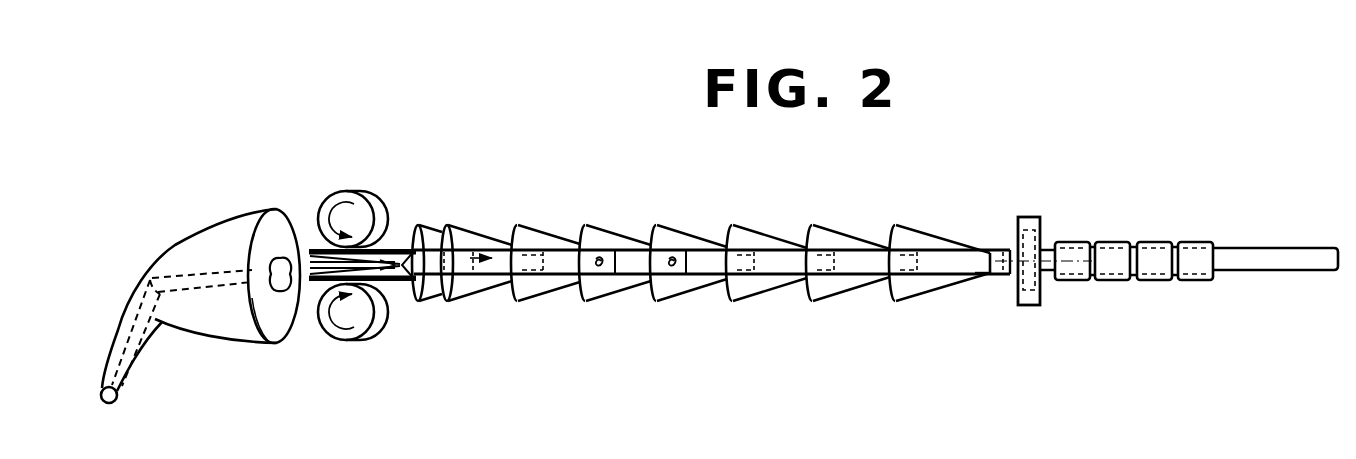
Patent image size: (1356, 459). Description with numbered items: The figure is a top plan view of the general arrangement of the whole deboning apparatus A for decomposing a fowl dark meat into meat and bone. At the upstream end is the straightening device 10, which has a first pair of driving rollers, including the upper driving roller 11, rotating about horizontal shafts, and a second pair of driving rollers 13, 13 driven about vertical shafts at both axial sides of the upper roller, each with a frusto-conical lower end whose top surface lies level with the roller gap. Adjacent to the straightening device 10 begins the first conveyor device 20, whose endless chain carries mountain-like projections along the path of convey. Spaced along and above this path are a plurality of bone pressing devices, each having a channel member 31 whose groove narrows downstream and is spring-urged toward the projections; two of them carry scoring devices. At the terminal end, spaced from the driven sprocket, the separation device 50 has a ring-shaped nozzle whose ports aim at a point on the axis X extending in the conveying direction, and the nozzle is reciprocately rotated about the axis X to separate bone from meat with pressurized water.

The straightening device 10 is at (300, 205).
The second pair of driving rollers 13 is at (356, 192).
The upper driving roller 11 is at (388, 284).
The first conveyor device 20 is at (771, 220).
The channel member 31 is at (800, 234).
The deboning apparatus A is at (752, 249).
The separation device 50 is at (1016, 229).
The axis X is at (975, 273).